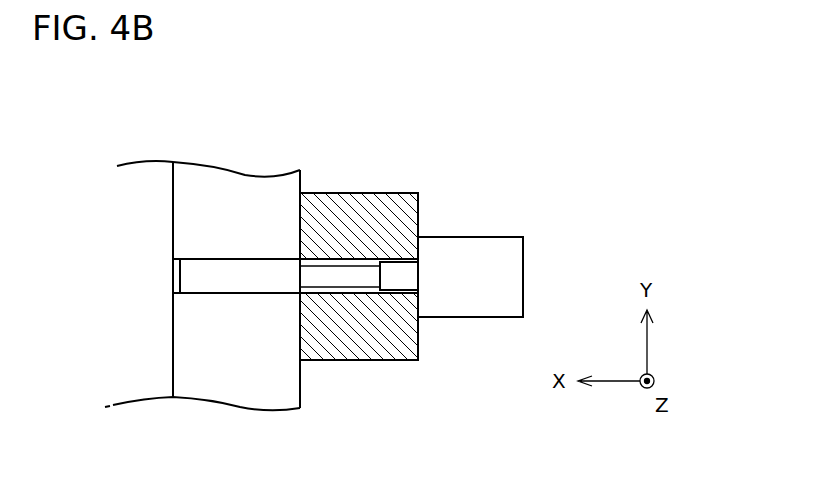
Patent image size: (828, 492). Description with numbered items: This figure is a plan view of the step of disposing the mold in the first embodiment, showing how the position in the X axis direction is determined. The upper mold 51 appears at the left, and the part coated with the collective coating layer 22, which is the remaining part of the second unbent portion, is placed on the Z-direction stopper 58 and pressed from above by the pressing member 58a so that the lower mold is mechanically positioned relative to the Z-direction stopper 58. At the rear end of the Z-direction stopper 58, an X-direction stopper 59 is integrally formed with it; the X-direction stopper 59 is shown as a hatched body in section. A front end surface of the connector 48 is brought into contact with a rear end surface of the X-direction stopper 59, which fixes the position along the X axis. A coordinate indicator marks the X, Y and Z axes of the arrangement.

The upper mold 51 is at (128, 177).
The Z-direction stopper 58 is at (226, 395).
The pressing member 58a is at (232, 267).
The collective coating layer 22 is at (333, 270).
The X-direction stopper 59 is at (416, 245).
The connector 48 is at (484, 246).